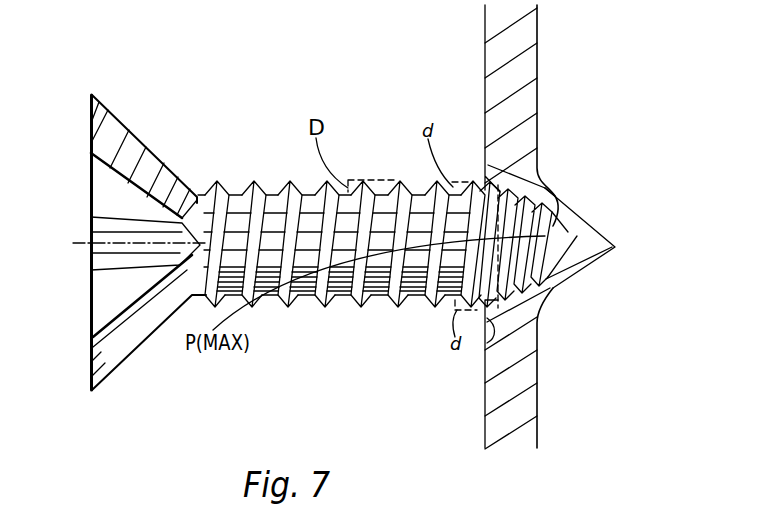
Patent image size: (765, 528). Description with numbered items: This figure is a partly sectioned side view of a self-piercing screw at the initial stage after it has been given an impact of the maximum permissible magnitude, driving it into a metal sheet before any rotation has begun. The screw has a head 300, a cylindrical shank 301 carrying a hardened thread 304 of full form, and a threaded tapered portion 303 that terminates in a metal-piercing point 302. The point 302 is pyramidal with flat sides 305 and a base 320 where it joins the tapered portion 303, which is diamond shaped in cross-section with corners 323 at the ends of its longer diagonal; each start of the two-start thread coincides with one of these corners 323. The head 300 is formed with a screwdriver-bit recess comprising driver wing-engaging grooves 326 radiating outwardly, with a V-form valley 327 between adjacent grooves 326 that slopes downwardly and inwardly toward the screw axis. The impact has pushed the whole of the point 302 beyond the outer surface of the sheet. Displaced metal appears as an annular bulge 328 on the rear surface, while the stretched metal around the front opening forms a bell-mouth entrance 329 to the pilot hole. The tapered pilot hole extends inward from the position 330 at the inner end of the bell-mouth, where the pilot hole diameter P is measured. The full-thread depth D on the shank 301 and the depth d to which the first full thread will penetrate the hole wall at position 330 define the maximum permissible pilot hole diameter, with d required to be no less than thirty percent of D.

The head 300 is at (140, 157).
The cylindrical shank 301 is at (343, 297).
The metal-piercing point 302 is at (628, 253).
The tapered portion 303 is at (555, 203).
The hardened thread 304 is at (435, 295).
The flat sides 305 is at (577, 235).
The base 320 is at (583, 262).
The corners 323 is at (568, 232).
The driver wing-engaging grooves 326 is at (97, 168).
The valley 327 is at (100, 223).
The annular bulge 328 is at (553, 290).
The bell-mouth entrance 329 is at (490, 323).
The point at inner end of bell-mouth 330 is at (539, 150).